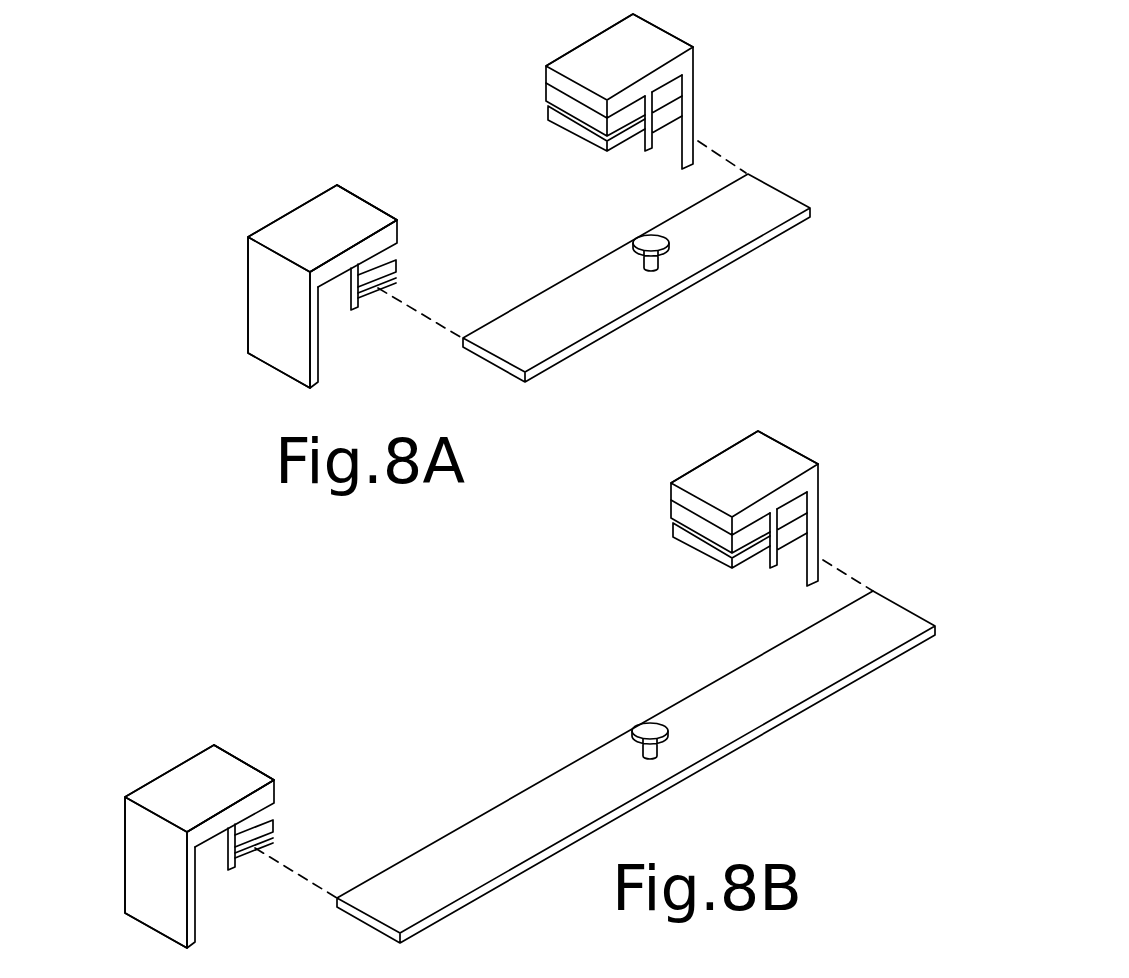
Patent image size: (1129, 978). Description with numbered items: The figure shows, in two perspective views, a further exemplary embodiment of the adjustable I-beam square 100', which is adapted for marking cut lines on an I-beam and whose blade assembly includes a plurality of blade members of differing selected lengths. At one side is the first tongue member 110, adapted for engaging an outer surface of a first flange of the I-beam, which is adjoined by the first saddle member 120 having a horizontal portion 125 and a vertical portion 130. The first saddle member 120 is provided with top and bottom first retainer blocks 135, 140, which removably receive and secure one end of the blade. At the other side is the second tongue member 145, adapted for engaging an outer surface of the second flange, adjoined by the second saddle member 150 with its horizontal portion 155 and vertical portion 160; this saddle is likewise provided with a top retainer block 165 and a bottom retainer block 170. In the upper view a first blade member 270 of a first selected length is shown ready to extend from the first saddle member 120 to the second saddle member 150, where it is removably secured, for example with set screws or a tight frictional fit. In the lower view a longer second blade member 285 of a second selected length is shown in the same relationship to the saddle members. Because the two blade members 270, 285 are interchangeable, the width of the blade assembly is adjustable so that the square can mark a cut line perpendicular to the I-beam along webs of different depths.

In FIG. 8A, the adjustable I-beam square 100' is at (252, 201).
In FIG. 8B, the adjustable I-beam square 100' is at (163, 765).
In FIG. 8A, the first tongue member 110 is at (272, 317).
In FIG. 8B, the first tongue member 110 is at (152, 877).
In FIG. 8A, the first saddle member 120 is at (328, 210).
In FIG. 8B, the first saddle member 120 is at (213, 775).
In FIG. 8A, the horizontal portion 125 is at (353, 207).
In FIG. 8B, the horizontal portion 125 is at (234, 770).
In FIG. 8A, the vertical portion 130 is at (354, 310).
In FIG. 8B, the vertical portion 130 is at (230, 870).
In FIG. 8A, the top first retainer block 135 is at (397, 255).
In FIG. 8B, the top first retainer block 135 is at (275, 815).
In FIG. 8A, the bottom first retainer block 140 is at (397, 281).
In FIG. 8B, the bottom first retainer block 140 is at (274, 841).
In FIG. 8A, the second tongue member 145 is at (694, 100).
In FIG. 8B, the second tongue member 145 is at (813, 512).
In FIG. 8A, the second saddle member 150 is at (593, 63).
In FIG. 8B, the second saddle member 150 is at (715, 463).
In FIG. 8A, the horizontal portion 155 is at (645, 32).
In FIG. 8B, the horizontal portion 155 is at (775, 450).
In FIG. 8A, the vertical portion 160 is at (666, 128).
In FIG. 8B, the vertical portion 160 is at (790, 545).
In FIG. 8A, the top retainer block 165 is at (552, 95).
In FIG. 8B, the top retainer block 165 is at (677, 510).
In FIG. 8A, the bottom retainer block 170 is at (609, 153).
In FIG. 8B, the bottom retainer block 170 is at (736, 566).
In FIG. 8A, the first blade member 270 is at (733, 230).
In FIG. 8B, the second blade member 285 is at (709, 731).